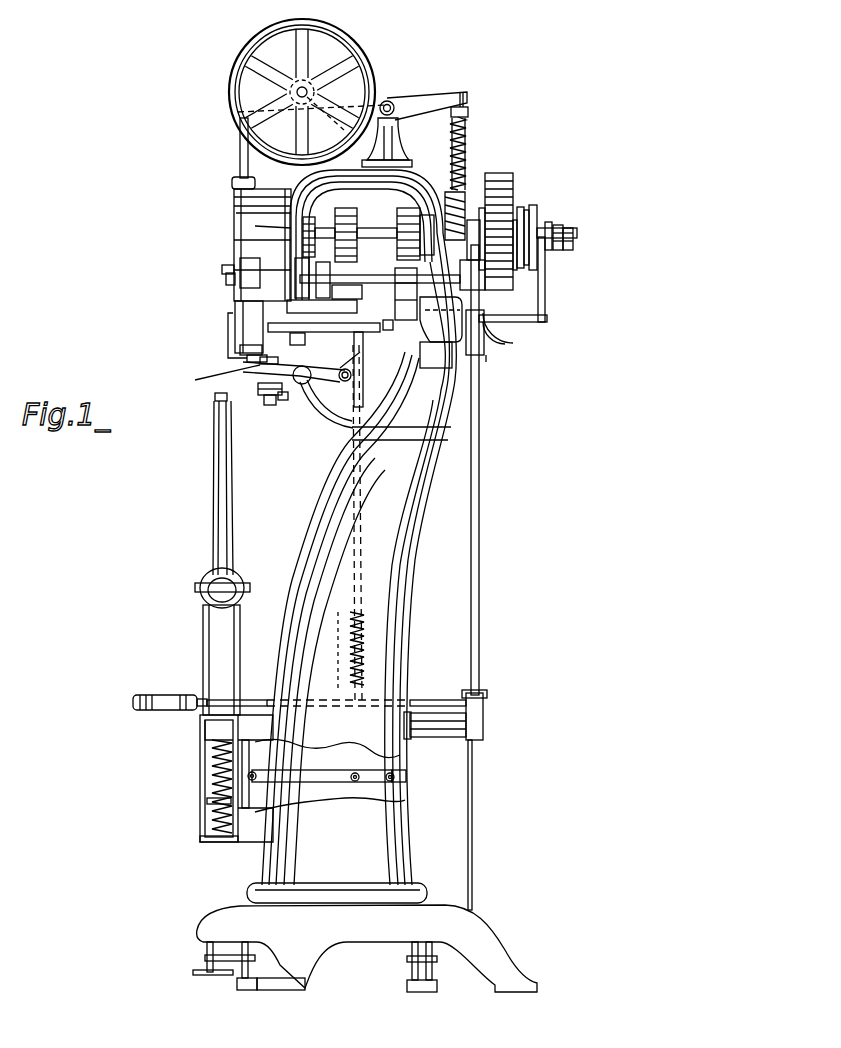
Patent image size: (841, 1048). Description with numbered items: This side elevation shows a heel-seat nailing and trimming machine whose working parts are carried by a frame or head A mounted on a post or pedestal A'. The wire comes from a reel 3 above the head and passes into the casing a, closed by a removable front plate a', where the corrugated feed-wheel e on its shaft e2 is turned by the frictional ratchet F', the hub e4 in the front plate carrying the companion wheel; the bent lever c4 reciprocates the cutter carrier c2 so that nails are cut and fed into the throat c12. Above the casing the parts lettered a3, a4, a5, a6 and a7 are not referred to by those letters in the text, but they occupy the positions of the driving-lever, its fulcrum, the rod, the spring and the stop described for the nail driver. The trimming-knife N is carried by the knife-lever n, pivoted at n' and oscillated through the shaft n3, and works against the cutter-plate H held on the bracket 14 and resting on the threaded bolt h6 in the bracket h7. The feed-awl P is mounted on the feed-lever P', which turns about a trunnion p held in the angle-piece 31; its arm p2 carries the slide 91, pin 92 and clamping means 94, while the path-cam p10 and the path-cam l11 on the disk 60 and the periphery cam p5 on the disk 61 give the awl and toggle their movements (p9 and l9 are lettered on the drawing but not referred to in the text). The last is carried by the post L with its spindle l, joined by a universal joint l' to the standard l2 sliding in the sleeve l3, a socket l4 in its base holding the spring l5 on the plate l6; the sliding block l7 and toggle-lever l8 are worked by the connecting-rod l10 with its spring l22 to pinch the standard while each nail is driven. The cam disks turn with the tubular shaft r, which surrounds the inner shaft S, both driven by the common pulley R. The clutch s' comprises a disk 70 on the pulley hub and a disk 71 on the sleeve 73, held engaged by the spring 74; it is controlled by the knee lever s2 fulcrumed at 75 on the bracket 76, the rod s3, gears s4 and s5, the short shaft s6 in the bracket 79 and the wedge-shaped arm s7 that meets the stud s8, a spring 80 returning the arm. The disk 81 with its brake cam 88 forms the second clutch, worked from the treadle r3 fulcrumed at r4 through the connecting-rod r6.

The reel 3 is at (362, 54).
The casing a is at (249, 209).
The removable front plate a' is at (245, 205).
The shaft n3 is at (273, 219).
The lever a3 is at (437, 94).
The pivot a4 is at (389, 102).
The rod a7 is at (466, 100).
The cap a5 is at (470, 114).
The spring a6 is at (469, 131).
The frame or head A is at (351, 536).
The post or pedestal A' is at (327, 651).
The connecting-rod l10 is at (352, 584).
The spring l22 is at (368, 638).
The path-cam p10 is at (319, 227).
The disk 60 is at (346, 227).
The path-cam l11 is at (377, 220).
The shaft r is at (406, 234).
The shaft e2 is at (377, 275).
The pin 92 is at (393, 294).
The part p9 is at (347, 292).
The slide 91 is at (322, 313).
The feed-lever P' is at (330, 340).
The angle-piece 31 is at (318, 346).
The trunnion p is at (303, 336).
The clamping means 94 is at (368, 369).
The hub e4 is at (221, 266).
The feed-wheel e is at (224, 278).
The bent lever c4 is at (213, 328).
The frictional ratchet F' is at (230, 321).
The carrier c2 is at (240, 350).
The throat c12 is at (247, 360).
The trimming-knife N is at (195, 380).
The feed-awl P is at (243, 376).
The cutter-plate H is at (258, 388).
The bracket h7 is at (265, 400).
The threaded bolt h6 is at (287, 394).
The trimming-knife lever n is at (294, 370).
The pivot n' is at (359, 373).
The bracket 14 is at (343, 412).
The spindle l is at (208, 404).
The post or standard L is at (212, 462).
The universal joint l' is at (212, 586).
The supporting-standard l2 is at (221, 660).
The laterally-swinging lever s2 is at (168, 685).
The spring 80 is at (262, 702).
The socket or sleeve l3 is at (200, 745).
The socket l4 is at (212, 770).
The spring l5 is at (207, 801).
The plate l6 is at (218, 843).
The sliding block l7 is at (250, 755).
The toggle-lever l8 is at (330, 788).
The lever end l9 is at (408, 777).
The connecting-rod s3 is at (482, 574).
The arm s7 is at (548, 293).
The short shaft s6 is at (548, 320).
The gear s5 is at (510, 348).
The bracket 79 is at (503, 356).
The gear s4 is at (441, 319).
The arm p2 is at (436, 355).
The fulcrum 75 is at (488, 700).
The bracket 76 is at (462, 740).
The connecting-rod r6 is at (476, 848).
The spring 74 is at (570, 264).
The cam 88 is at (481, 206).
The disk 81 is at (505, 173).
The pulley R is at (515, 176).
The disk 70 is at (522, 204).
The clutch s' is at (530, 229).
The disk 71 is at (546, 217).
The shaft S is at (553, 252).
The stud s8 is at (549, 224).
The sleeve 73 is at (566, 228).
The periphery cam p5 is at (418, 176).
The disk 61 is at (428, 182).
The treadle r3 is at (357, 952).
The fulcrum r4 is at (205, 957).